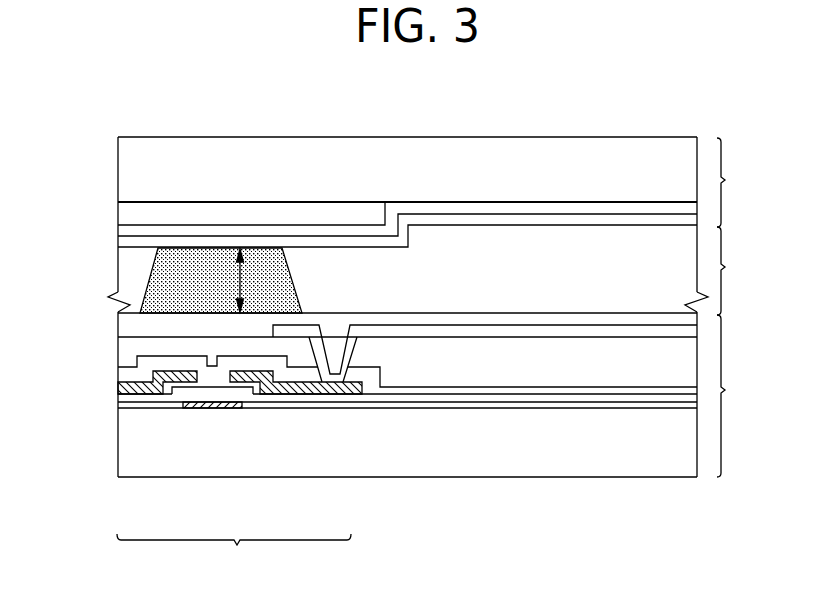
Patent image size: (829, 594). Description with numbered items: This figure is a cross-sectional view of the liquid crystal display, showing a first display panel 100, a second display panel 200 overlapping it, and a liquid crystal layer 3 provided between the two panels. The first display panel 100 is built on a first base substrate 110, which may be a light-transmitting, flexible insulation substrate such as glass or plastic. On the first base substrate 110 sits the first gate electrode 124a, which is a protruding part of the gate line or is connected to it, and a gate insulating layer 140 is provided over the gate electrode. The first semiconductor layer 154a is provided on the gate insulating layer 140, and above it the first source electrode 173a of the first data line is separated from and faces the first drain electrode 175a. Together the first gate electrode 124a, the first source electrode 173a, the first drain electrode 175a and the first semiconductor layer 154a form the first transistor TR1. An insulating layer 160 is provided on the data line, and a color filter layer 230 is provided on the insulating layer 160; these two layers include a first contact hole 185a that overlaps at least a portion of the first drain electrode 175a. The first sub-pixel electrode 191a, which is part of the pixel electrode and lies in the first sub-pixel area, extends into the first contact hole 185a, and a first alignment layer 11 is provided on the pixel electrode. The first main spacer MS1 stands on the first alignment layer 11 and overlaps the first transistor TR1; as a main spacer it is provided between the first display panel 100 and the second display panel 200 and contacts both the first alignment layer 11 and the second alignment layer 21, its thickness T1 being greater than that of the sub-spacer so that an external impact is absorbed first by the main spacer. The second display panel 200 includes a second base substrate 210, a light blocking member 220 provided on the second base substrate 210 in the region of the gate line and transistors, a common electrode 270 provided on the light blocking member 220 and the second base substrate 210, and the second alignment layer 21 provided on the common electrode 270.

The second base substrate 210 is at (625, 152).
The light blocking member 220 is at (282, 210).
The second alignment layer 21 is at (430, 220).
The common electrode 270 is at (475, 210).
The second display panel 200 is at (743, 182).
The liquid crystal layer 3 is at (732, 271).
The first display panel 100 is at (744, 396).
The first main spacer MS1 is at (175, 273).
The thickness of the main spacer T1 is at (255, 280).
The first alignment layer 11 is at (133, 327).
The first sub-pixel electrode 191a is at (545, 333).
The first contact hole 185a is at (335, 330).
The color filter layer 230 is at (637, 363).
The insulating layer 160 is at (575, 393).
The gate insulating layer 140 is at (493, 405).
The first base substrate 110 is at (422, 455).
The first semiconductor layer 154a is at (255, 397).
The first gate electrode 124a is at (205, 408).
The first source electrode 173a is at (162, 388).
The first drain electrode 175a is at (313, 390).
The first transistor TR1 is at (234, 553).